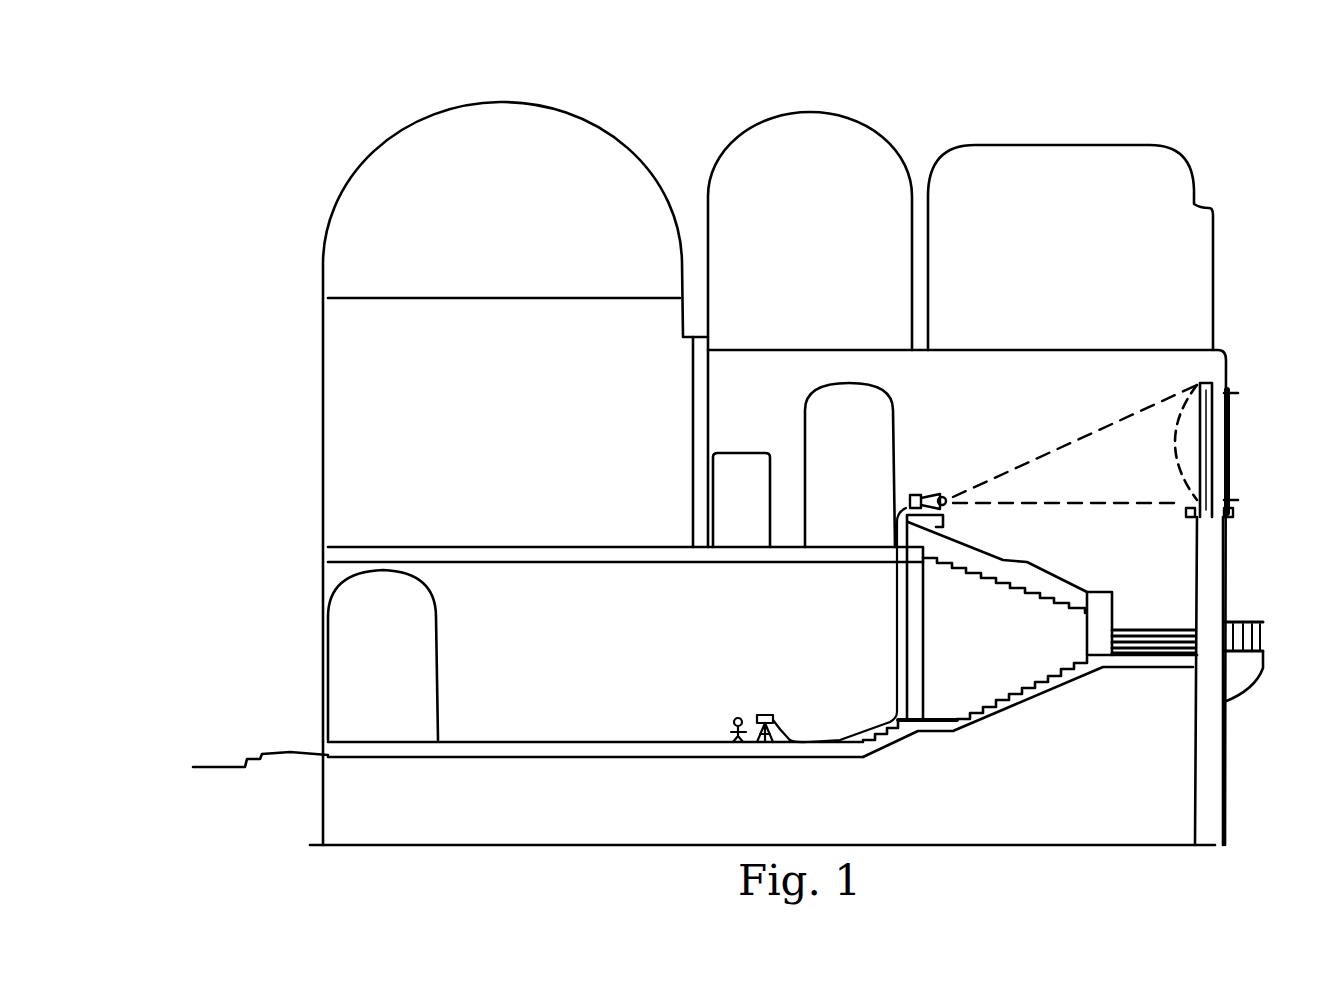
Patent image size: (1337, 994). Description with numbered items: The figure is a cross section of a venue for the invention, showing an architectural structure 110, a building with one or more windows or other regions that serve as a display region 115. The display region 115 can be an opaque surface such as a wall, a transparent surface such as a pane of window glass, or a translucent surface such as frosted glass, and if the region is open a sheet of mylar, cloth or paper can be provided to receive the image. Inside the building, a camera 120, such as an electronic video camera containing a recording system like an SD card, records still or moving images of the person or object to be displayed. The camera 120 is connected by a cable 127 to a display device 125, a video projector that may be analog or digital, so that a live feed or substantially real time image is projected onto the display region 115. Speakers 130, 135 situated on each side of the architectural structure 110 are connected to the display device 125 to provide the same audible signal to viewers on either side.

The architectural structure 110 is at (428, 112).
The display region 115 is at (1237, 438).
The camera 120 is at (762, 706).
The display device 125 is at (927, 490).
The cable 127 is at (872, 722).
The speaker 130 is at (1183, 519).
The speaker 135 is at (1234, 519).